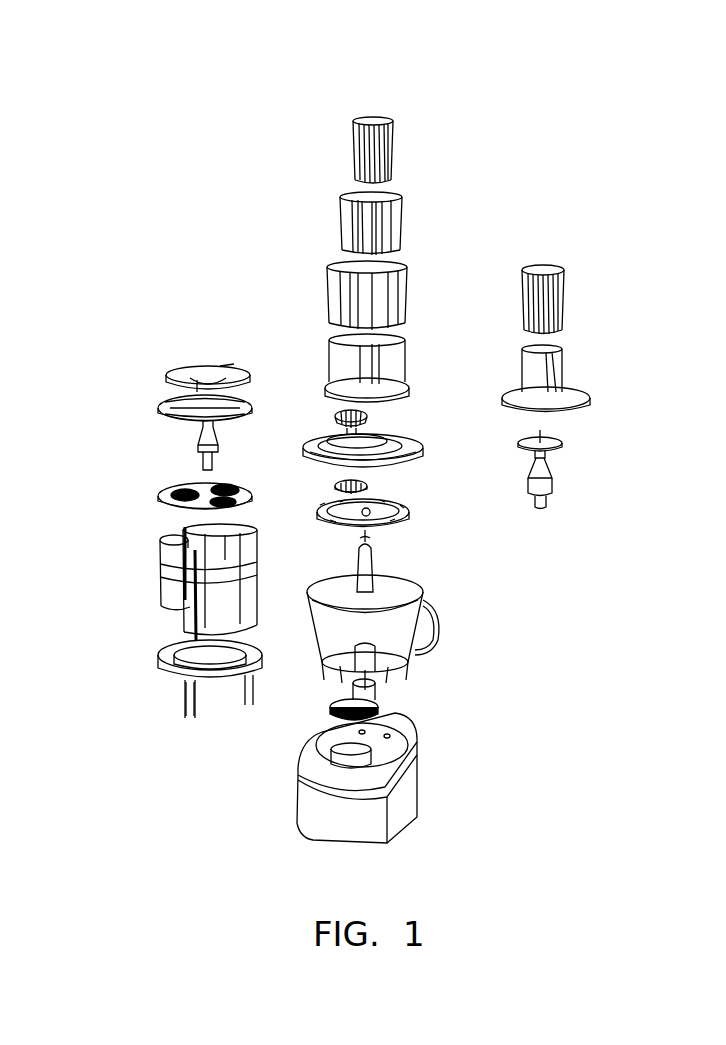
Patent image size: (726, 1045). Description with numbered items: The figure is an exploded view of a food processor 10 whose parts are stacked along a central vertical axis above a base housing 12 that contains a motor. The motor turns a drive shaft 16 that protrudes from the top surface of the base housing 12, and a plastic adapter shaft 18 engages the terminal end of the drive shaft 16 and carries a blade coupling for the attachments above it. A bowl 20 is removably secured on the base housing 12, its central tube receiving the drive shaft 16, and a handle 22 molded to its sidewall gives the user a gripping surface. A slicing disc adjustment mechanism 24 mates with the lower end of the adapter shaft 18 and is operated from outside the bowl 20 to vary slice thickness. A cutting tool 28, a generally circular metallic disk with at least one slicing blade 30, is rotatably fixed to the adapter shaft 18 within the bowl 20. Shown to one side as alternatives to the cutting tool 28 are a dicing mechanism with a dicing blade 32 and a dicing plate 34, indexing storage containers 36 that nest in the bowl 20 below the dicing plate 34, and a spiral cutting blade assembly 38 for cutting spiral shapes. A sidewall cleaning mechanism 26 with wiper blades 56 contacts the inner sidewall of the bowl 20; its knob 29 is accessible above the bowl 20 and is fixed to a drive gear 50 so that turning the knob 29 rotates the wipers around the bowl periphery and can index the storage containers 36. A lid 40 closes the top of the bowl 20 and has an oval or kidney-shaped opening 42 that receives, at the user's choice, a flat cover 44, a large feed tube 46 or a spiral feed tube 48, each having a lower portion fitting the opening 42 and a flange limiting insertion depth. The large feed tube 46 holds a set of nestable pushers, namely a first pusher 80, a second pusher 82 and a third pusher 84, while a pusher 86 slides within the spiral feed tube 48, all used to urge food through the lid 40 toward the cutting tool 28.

The food processor 10 is at (588, 80).
The base housing 12 is at (422, 757).
The drive shaft 16 is at (358, 727).
The adapter shaft 18 is at (380, 566).
The bowl 20 is at (418, 672).
The handle 22 is at (432, 626).
The slicing disc adjustment mechanism 24 is at (382, 704).
The sidewall cleaning mechanism 26 is at (155, 655).
The cutting tool 28 is at (408, 531).
The knob 29 is at (378, 419).
The slicing blade 30 is at (372, 519).
The dicing blade 32 is at (155, 407).
The dicing plate 34 is at (156, 494).
The indexing storage containers 36 is at (162, 568).
The spiral cutting blade assembly 38 is at (560, 473).
The lid 40 is at (408, 478).
The opening 42 is at (380, 446).
The flat cover 44 is at (162, 363).
The large feed tube 46 is at (323, 350).
The spiral feed tube 48 is at (576, 368).
The drive gear 50 is at (333, 487).
The wiper blades 56 is at (190, 712).
The first pusher 80 is at (325, 290).
The second pusher 82 is at (338, 216).
The third pusher 84 is at (396, 150).
The pusher 86 is at (568, 278).